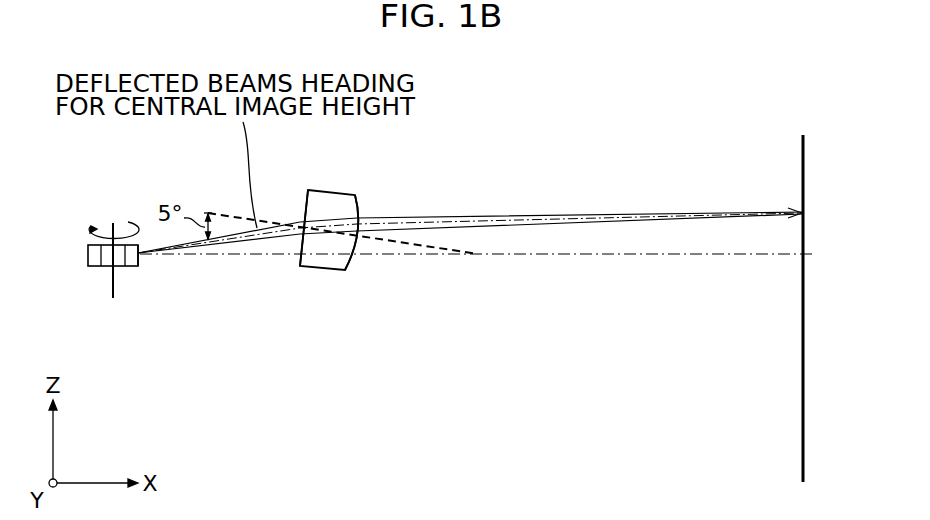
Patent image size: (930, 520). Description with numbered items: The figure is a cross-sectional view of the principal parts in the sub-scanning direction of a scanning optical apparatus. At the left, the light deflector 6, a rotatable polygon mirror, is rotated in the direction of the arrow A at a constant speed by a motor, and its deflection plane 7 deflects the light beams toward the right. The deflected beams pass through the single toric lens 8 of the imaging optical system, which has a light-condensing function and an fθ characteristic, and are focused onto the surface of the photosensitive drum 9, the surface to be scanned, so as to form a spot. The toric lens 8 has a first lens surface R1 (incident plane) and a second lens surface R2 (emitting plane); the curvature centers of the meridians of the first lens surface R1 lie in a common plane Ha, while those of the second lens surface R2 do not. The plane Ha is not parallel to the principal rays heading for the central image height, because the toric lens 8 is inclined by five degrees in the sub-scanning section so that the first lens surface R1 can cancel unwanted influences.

The light deflector 6 is at (100, 268).
The deflecting surface 7 is at (141, 263).
The toric lens 8 is at (335, 190).
The photosensitive drum 9 is at (804, 316).
The first lens surface R1 is at (303, 240).
The second lens surface R2 is at (350, 268).
The plane Ha is at (407, 247).
The arrow A is at (100, 224).